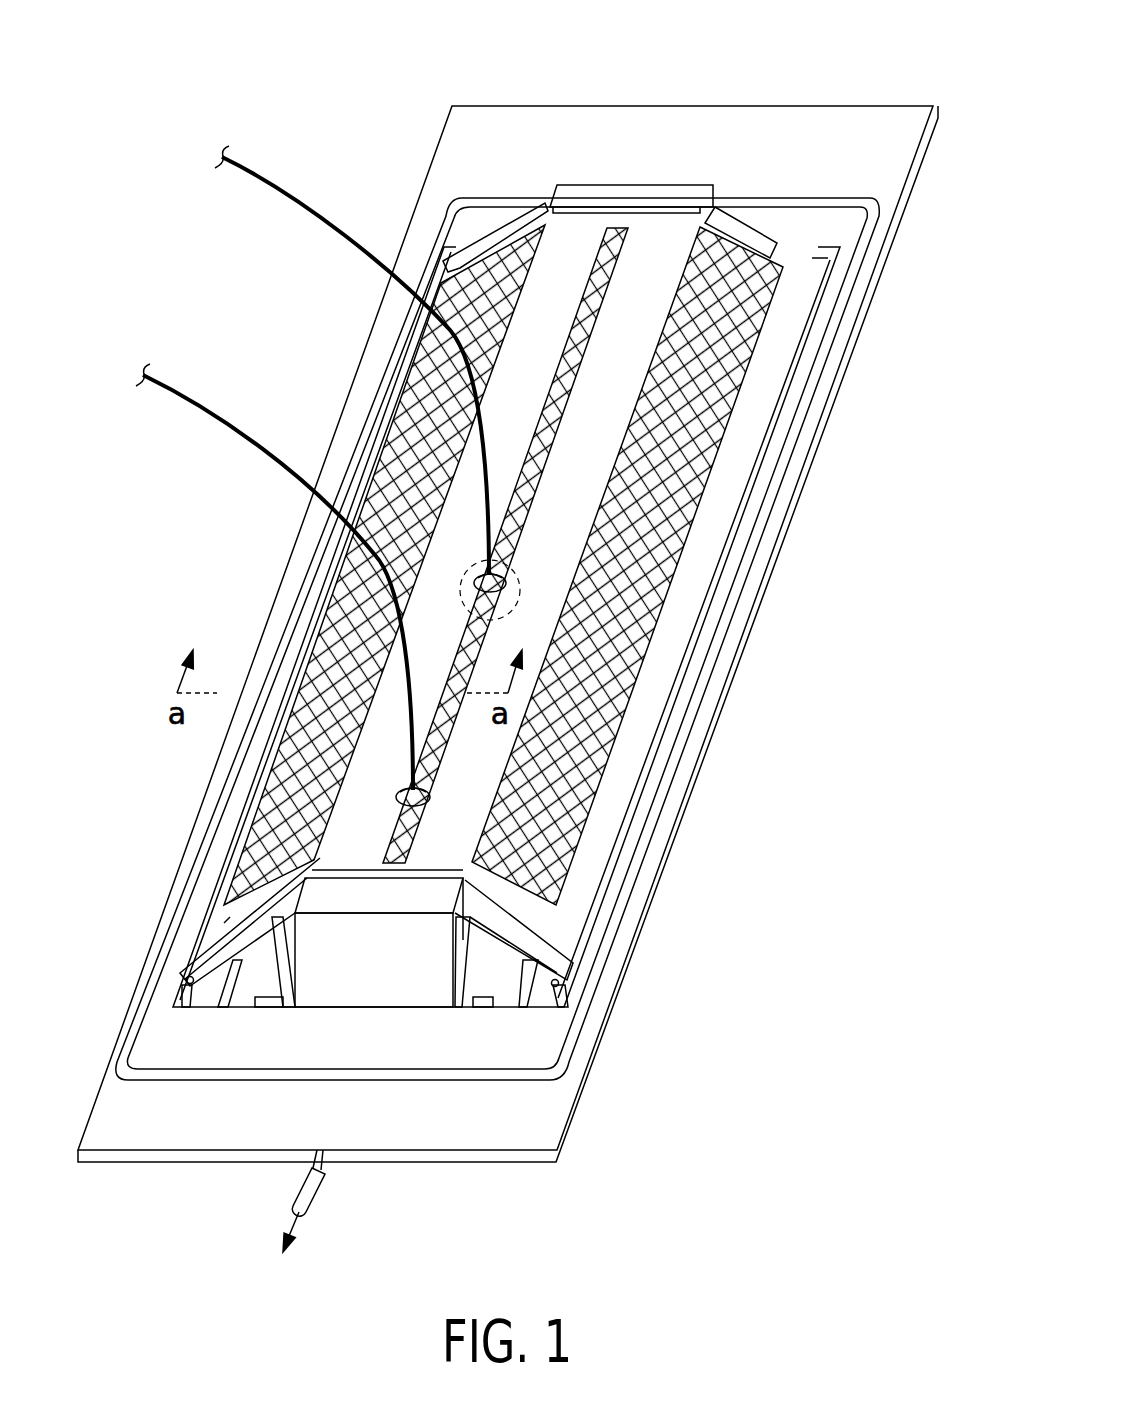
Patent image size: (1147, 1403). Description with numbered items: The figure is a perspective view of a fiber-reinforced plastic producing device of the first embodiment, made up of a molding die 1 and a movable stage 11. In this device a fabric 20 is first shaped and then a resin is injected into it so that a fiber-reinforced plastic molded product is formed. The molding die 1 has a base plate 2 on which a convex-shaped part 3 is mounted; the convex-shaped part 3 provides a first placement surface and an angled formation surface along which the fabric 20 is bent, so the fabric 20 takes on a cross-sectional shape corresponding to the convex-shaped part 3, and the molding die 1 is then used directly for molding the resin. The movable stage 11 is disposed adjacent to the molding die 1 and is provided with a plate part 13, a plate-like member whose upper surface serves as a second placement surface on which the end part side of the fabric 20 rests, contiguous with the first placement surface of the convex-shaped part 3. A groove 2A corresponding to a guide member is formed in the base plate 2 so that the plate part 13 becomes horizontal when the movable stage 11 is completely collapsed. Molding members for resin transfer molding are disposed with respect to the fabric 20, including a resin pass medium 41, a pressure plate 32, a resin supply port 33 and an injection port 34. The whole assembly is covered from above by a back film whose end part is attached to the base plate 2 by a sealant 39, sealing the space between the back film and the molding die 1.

The molding die 1 is at (822, 55).
The base plate 2 is at (902, 152).
The groove 2A is at (210, 1007).
The convex-shaped part 3 is at (645, 197).
The movable stage 11 is at (245, 975).
The plate part 13 is at (623, 780).
The fabric 20 is at (227, 922).
The pressure plate 32 is at (584, 240).
The resin supply port 33 is at (560, 367).
The injection port 34 is at (504, 578).
The sealant 39 is at (740, 605).
The resin pass medium 41 is at (494, 265).